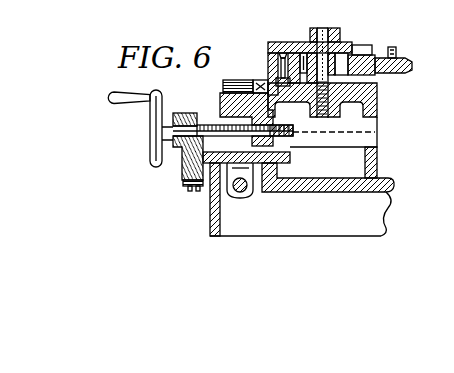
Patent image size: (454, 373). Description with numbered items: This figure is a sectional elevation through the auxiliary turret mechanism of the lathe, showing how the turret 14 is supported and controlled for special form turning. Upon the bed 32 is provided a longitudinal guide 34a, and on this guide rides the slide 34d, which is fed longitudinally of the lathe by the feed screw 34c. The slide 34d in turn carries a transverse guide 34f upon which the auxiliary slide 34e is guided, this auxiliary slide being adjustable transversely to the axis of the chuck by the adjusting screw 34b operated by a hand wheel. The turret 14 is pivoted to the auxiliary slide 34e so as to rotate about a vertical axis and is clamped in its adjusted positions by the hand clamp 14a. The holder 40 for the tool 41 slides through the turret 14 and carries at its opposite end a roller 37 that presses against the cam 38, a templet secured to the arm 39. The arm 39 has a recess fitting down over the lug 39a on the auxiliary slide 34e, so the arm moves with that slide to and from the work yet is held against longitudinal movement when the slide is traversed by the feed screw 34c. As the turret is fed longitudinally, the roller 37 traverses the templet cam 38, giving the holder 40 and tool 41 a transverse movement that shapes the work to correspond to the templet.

The turret 14 is at (363, 40).
The hand clamp 14a is at (322, 28).
The bed 32 is at (388, 198).
The longitudinal guide 34a is at (215, 185).
The adjusting screw 34b is at (293, 135).
The feed screw 34c is at (241, 192).
The slide 34d is at (185, 160).
The auxiliary slide 34e is at (375, 108).
The transverse guide 34f is at (377, 127).
The roller 37 is at (270, 57).
The cam 38 is at (222, 86).
The arm 39 is at (222, 98).
The lug 39a is at (256, 82).
The holder 40 is at (397, 73).
The tool 41 is at (412, 63).